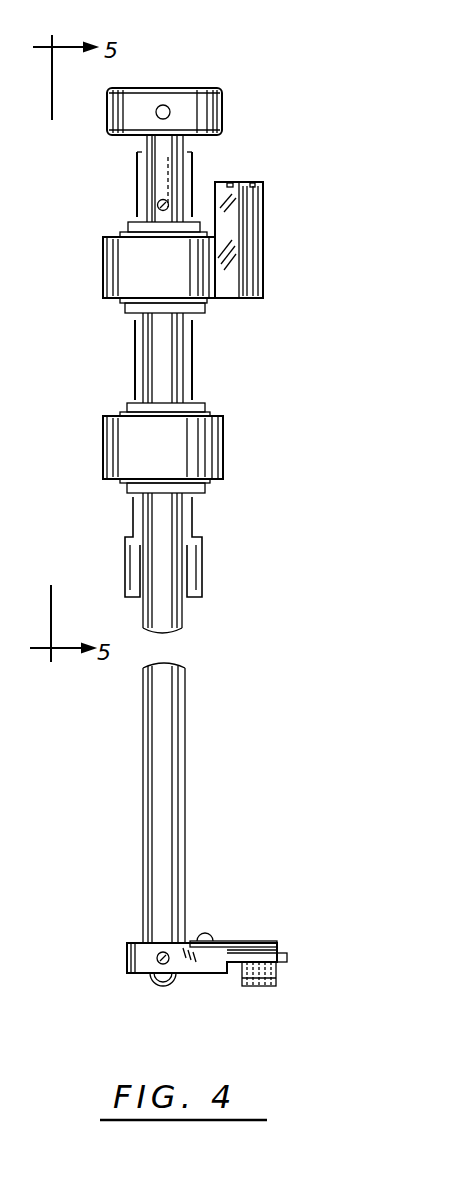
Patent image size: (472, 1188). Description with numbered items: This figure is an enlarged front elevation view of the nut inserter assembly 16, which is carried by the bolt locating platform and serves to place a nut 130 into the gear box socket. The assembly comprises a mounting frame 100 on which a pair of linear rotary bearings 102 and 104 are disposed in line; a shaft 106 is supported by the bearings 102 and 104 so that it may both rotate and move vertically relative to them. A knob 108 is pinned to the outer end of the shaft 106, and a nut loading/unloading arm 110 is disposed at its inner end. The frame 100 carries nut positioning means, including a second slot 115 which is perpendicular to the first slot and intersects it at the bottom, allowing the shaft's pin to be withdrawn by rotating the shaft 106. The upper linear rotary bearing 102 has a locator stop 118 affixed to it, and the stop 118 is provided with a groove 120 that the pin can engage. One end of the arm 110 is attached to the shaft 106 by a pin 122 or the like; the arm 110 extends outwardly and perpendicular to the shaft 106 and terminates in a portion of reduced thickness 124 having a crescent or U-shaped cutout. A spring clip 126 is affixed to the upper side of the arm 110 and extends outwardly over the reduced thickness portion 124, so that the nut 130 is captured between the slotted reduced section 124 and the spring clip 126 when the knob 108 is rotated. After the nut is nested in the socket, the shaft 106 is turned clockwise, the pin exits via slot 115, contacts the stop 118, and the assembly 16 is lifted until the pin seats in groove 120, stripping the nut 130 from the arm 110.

The nut inserter assembly 16 is at (300, 398).
The mounting frame 100 is at (190, 353).
The upper linear rotary bearing 102 is at (173, 277).
The lower linear rotary bearing 104 is at (171, 459).
The shaft 106 is at (183, 723).
The knob 108 is at (168, 88).
The nut loading/unloading arm 110 is at (210, 968).
The second slot 115 is at (192, 202).
The locator stop 118 is at (262, 242).
The groove 120 is at (253, 183).
The pin 122 is at (160, 963).
The portion of reduced thickness 124 is at (286, 957).
The spring clip 126 is at (230, 942).
The nut 130 is at (278, 947).